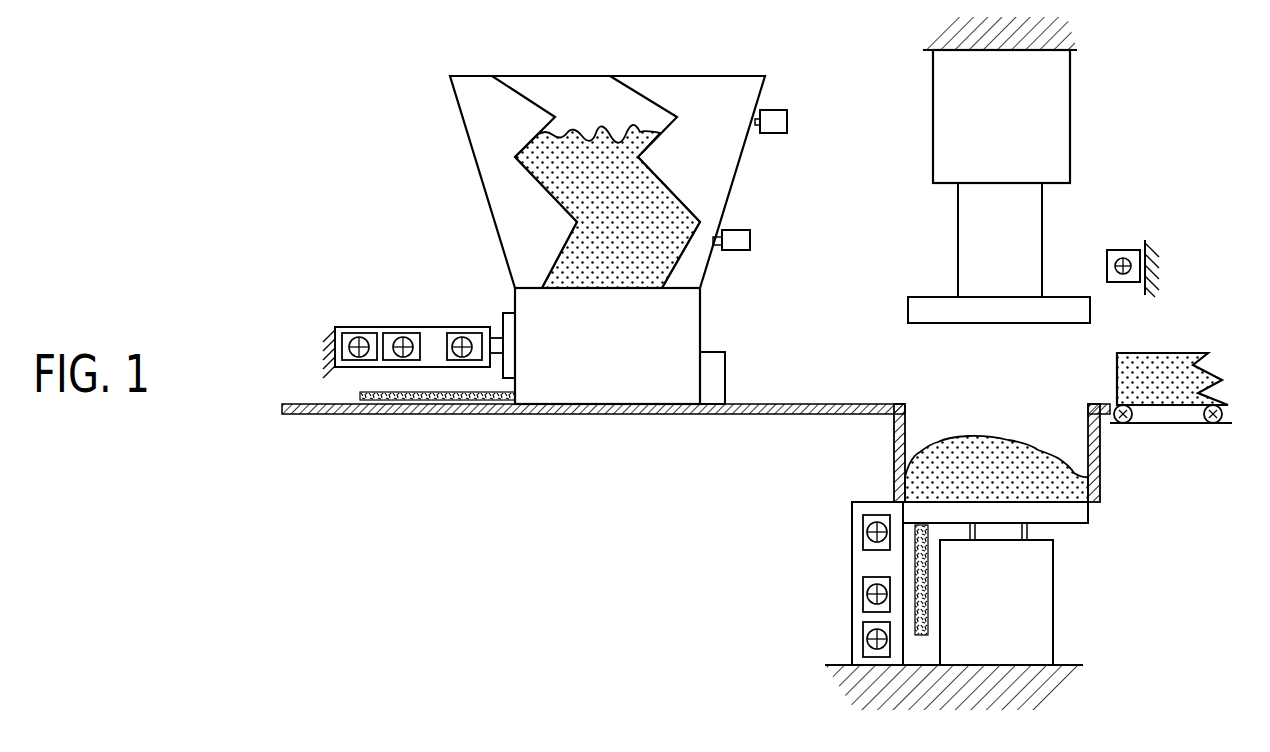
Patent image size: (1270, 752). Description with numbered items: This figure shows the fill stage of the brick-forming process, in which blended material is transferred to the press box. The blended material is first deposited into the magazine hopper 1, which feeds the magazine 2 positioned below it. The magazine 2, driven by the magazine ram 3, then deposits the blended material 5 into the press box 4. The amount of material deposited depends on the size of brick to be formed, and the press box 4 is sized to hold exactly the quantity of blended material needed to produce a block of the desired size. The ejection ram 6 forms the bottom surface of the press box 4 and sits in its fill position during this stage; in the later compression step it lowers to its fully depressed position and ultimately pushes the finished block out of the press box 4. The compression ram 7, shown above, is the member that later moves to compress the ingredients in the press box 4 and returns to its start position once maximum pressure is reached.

The magazine hopper 1 is at (480, 127).
The magazine 2 is at (593, 393).
The magazine ram 3 is at (502, 313).
The press box 4 is at (894, 440).
The blended material 5 is at (1003, 443).
The ejection ram 6 is at (1077, 525).
The compression ram 7 is at (1060, 297).